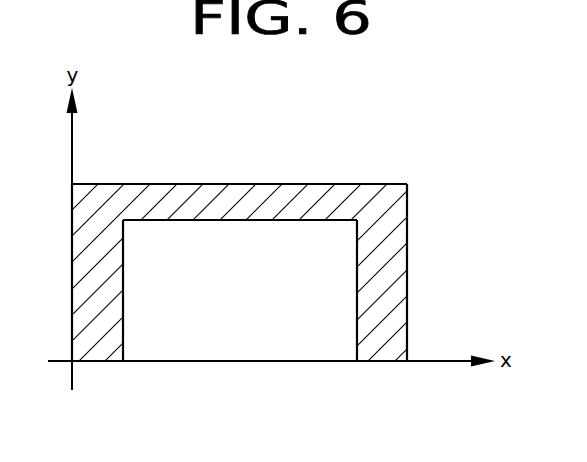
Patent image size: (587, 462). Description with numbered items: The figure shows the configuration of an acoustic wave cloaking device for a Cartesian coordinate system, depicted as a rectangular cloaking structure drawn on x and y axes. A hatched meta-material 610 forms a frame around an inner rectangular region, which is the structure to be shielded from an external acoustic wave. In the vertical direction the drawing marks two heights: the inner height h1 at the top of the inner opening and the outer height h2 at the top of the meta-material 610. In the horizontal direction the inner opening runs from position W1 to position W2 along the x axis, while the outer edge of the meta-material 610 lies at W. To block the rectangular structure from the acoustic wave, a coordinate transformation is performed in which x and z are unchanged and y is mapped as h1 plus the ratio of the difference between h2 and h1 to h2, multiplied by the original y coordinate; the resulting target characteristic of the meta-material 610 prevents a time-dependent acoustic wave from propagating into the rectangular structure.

The meta-material 610 is at (293, 258).
The inner height h1 is at (240, 238).
The outer height h2 is at (239, 166).
The left inner wall position W1 is at (106, 292).
The right inner wall position W2 is at (356, 310).
The outer width W is at (406, 289).